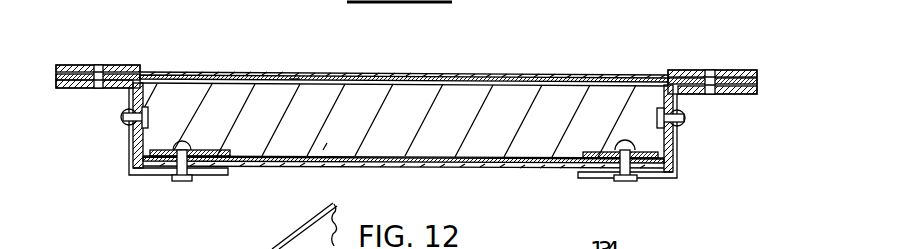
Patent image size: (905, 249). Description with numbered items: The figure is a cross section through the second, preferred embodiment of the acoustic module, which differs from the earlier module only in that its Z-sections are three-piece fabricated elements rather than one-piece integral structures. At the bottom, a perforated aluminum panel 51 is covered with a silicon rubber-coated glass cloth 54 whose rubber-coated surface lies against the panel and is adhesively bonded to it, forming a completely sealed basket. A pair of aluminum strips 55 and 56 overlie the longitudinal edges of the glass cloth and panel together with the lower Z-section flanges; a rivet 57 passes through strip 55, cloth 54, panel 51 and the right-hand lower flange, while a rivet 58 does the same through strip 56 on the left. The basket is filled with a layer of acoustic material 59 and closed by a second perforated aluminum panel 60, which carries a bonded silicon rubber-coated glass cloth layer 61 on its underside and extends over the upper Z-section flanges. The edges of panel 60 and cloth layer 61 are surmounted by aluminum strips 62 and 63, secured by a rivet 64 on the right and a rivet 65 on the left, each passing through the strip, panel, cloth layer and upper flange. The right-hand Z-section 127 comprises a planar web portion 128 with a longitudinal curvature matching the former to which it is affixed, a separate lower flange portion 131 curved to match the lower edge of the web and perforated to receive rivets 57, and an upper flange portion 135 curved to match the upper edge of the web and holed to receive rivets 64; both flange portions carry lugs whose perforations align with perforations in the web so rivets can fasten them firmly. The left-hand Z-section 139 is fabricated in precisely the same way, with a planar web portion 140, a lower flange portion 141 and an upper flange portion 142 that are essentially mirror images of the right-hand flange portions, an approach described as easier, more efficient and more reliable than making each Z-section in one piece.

The perforated aluminum panel 51 is at (376, 170).
The silicon rubber-coated glass cloth 54 is at (323, 157).
The aluminum strip 55 is at (596, 152).
The aluminum strip 56 is at (157, 150).
The rivet 57 is at (626, 150).
The rivet 58 is at (189, 150).
The acoustic material 59 is at (463, 133).
The perforated aluminum panel 60 is at (318, 72).
The silicon rubber-coated glass cloth layer 61 is at (297, 86).
The aluminum strip 62 is at (738, 70).
The aluminum strip 63 is at (123, 67).
The rivet 64 is at (709, 71).
The rivet 65 is at (96, 65).
The right-hand Z-section 127 is at (682, 142).
The planar web portion 128 is at (663, 150).
The lower flange portion 131 is at (653, 173).
The upper flange portion 135 is at (732, 95).
The left-hand Z-section 139 is at (124, 128).
The planar web portion 140 is at (146, 97).
The lower flange portion 141 is at (158, 172).
The upper flange portion 142 is at (62, 90).